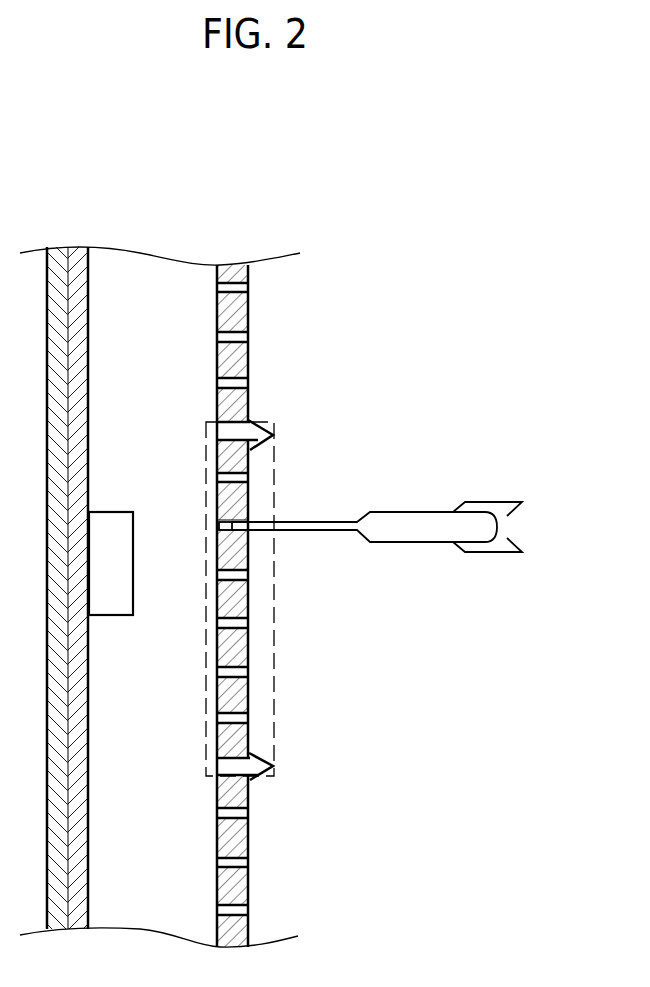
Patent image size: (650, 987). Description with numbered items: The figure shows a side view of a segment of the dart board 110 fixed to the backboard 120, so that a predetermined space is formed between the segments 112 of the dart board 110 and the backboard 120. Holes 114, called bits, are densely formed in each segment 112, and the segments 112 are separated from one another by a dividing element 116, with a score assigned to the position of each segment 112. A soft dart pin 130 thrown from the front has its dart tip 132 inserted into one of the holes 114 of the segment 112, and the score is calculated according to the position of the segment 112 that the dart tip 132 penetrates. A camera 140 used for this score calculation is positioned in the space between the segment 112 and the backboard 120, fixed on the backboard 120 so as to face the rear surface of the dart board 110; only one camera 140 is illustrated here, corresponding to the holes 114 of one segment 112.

The dart board 110 is at (230, 270).
The segment 112 is at (275, 625).
The hole 114 is at (253, 437).
The dividing element 116 is at (249, 716).
The backboard 120 is at (78, 255).
The soft dart pin 130 is at (493, 548).
The dart tip 132 is at (232, 526).
The camera 140 is at (112, 512).